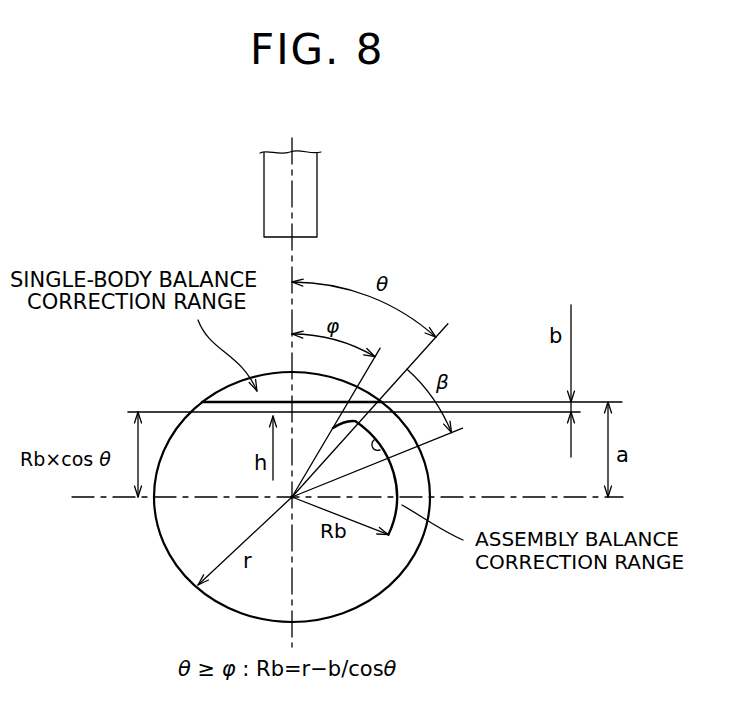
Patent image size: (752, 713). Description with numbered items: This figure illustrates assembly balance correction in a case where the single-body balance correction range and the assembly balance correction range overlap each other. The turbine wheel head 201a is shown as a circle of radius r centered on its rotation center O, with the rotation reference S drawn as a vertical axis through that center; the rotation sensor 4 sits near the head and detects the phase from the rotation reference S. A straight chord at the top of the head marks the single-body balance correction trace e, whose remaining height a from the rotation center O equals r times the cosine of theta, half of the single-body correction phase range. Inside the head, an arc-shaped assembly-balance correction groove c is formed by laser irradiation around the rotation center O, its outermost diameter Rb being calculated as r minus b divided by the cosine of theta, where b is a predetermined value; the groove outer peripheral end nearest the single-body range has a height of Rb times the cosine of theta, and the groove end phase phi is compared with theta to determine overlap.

The rotation sensor 4 is at (300, 198).
The turbine wheel head 201a is at (381, 594).
The rotation reference S is at (290, 379).
The single-body balance correction trace e is at (222, 393).
The assembly-balance correction groove c is at (380, 450).
The rotation center O is at (292, 497).